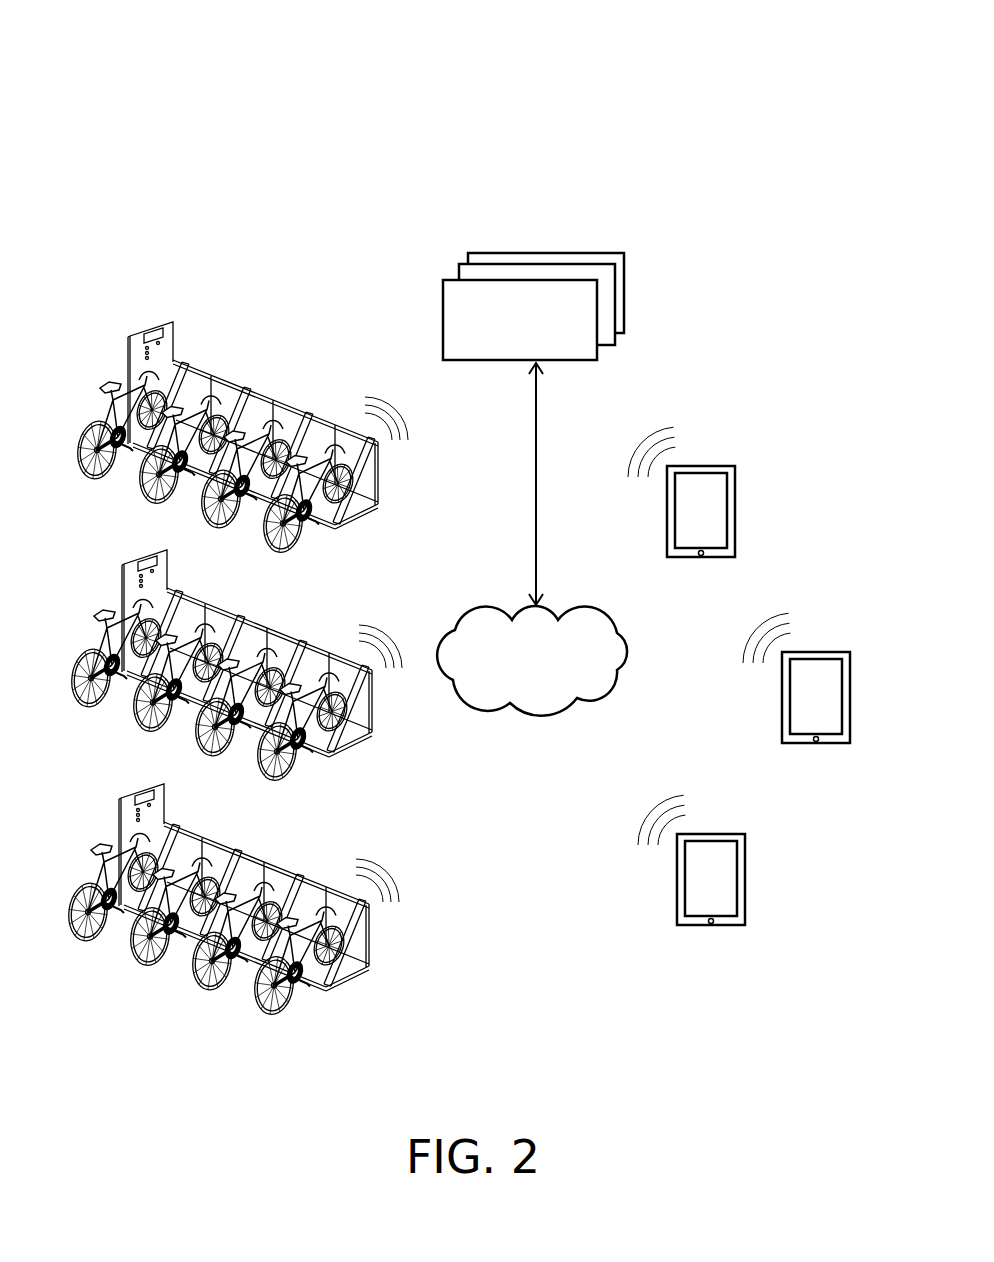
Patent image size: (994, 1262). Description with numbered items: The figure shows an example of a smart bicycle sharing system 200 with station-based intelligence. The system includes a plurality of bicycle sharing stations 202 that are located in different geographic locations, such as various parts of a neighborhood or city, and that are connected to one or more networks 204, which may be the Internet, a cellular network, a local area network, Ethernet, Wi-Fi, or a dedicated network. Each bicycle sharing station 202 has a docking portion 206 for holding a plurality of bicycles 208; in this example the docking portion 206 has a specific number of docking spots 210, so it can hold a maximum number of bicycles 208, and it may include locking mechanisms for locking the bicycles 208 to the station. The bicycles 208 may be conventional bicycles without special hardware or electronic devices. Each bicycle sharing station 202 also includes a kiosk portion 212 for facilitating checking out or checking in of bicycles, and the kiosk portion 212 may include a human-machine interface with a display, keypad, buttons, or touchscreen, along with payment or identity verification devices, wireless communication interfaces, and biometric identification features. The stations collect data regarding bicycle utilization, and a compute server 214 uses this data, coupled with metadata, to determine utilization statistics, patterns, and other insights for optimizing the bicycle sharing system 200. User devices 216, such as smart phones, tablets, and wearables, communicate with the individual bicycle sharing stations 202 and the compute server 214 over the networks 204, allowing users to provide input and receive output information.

The smart bicycle sharing system 200 is at (861, 103).
The bicycle sharing station 202 is at (192, 368).
The network 204 is at (517, 698).
The docking portion 206 is at (378, 500).
The bicycle 208 is at (82, 475).
The docking spot 210 is at (245, 393).
The kiosk portion 212 is at (145, 328).
The compute server 214 is at (627, 275).
The user device 216 is at (735, 477).